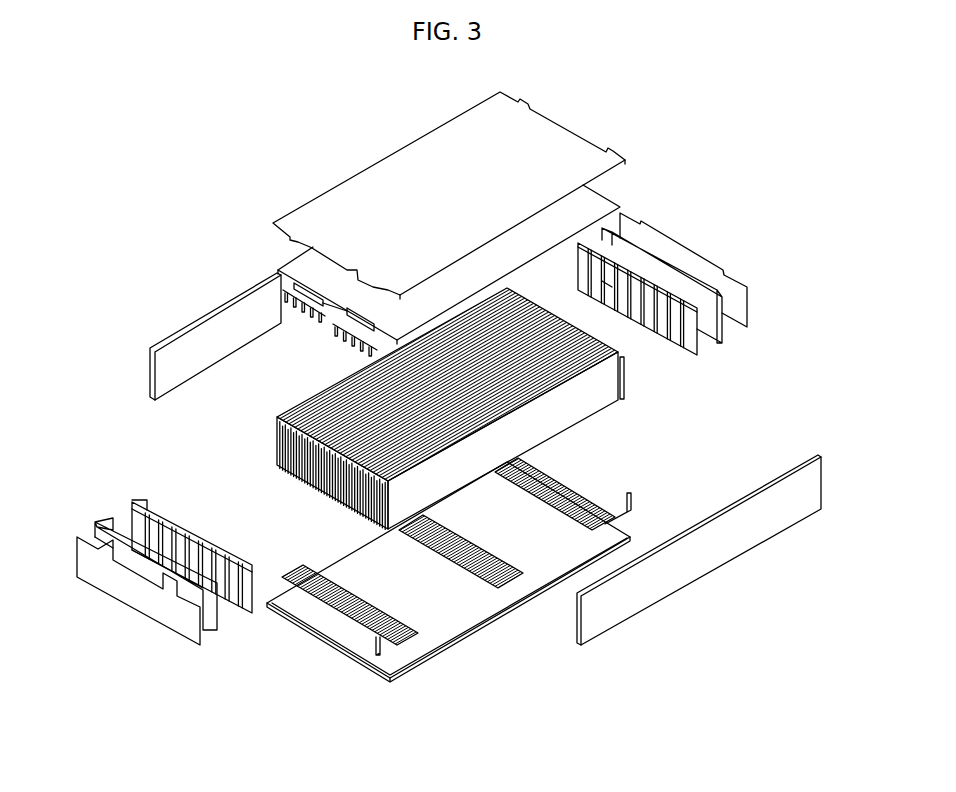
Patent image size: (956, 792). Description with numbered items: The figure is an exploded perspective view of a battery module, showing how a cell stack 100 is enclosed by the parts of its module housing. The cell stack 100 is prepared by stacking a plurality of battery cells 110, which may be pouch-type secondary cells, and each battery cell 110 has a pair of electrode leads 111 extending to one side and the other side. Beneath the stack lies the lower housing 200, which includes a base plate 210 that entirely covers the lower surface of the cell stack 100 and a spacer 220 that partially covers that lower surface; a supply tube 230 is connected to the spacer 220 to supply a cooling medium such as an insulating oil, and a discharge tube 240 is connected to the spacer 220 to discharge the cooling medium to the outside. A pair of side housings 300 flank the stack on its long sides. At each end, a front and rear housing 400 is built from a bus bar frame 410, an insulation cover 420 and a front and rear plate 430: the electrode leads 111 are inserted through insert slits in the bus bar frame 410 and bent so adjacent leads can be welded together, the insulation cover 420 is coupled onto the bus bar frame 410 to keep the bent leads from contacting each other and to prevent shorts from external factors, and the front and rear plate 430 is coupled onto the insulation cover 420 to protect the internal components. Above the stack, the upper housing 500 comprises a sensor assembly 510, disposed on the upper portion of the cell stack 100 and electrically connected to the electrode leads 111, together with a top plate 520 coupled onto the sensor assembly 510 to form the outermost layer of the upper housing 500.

The cell stack 100 is at (648, 417).
The battery cell 110 is at (582, 407).
The electrode lead 111 is at (377, 518).
The lower housing 200 is at (437, 668).
The base plate 210 is at (458, 642).
The spacer 220 is at (342, 622).
The supply tube 230 is at (375, 645).
The discharge tube 240 is at (630, 495).
The side housing 300 is at (190, 312).
The front and rear housing 400 is at (693, 242).
The bus bar frame 410 is at (697, 353).
The insulation cover 420 is at (723, 347).
The front and rear plate 430 is at (747, 327).
The upper housing 500 is at (360, 160).
The sensor assembly 510 is at (597, 197).
The top plate 520 is at (553, 127).